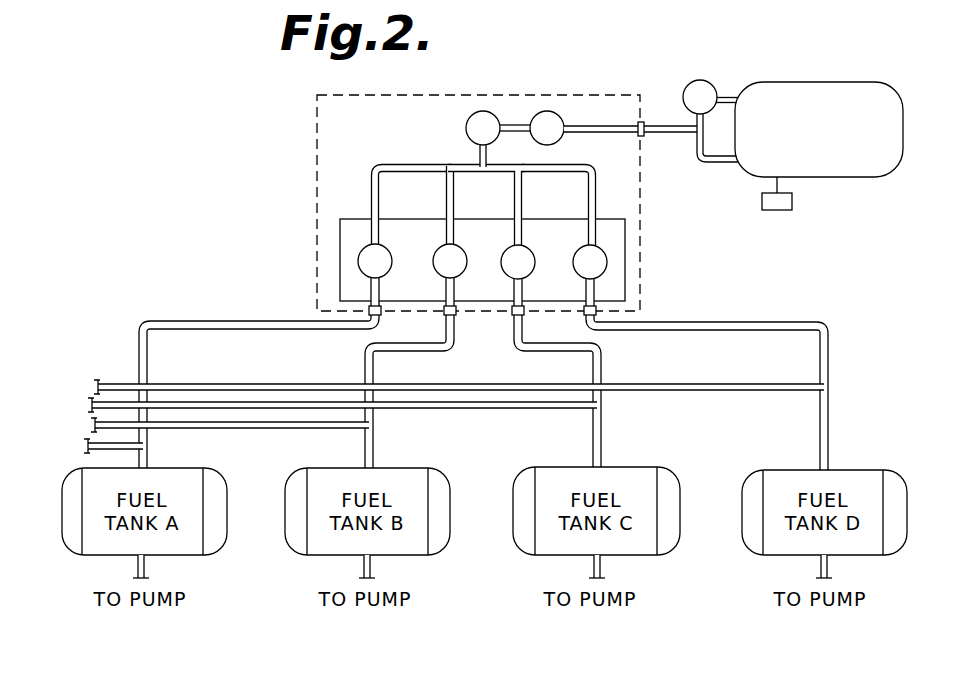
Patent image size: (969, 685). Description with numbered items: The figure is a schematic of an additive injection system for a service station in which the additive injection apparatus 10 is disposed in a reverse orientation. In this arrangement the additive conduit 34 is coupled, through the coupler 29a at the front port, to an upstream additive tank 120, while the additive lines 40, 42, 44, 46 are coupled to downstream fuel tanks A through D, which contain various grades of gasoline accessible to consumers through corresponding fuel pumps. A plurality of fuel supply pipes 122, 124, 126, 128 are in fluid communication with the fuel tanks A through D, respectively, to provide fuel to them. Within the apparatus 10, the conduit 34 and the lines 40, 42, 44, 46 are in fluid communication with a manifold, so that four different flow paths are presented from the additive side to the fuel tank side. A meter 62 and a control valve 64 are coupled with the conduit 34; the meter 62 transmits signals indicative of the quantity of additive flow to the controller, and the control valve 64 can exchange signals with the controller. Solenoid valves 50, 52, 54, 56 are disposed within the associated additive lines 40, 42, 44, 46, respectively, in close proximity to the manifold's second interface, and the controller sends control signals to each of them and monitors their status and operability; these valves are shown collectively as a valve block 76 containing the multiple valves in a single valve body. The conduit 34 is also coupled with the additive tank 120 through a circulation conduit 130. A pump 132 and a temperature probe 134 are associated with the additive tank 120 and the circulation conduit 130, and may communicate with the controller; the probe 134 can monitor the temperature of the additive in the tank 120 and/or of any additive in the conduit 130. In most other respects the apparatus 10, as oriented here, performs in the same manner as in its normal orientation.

The additive injection apparatus 10 is at (306, 148).
The coupler 29a is at (646, 121).
The additive conduit 34 is at (587, 125).
The additive line 40 is at (371, 196).
The additive line 42 is at (446, 196).
The additive line 44 is at (514, 204).
The additive line 46 is at (586, 204).
The solenoid valve 50 is at (386, 247).
The solenoid valve 52 is at (434, 281).
The solenoid valve 54 is at (535, 256).
The solenoid valve 56 is at (604, 268).
The meter 62 is at (467, 121).
The control valve 64 is at (545, 111).
The valve block 76 is at (625, 233).
The additive tank 120 is at (800, 86).
The fuel supply pipe 122 is at (146, 458).
The fuel supply pipe 124 is at (264, 432).
The fuel supply pipe 126 is at (476, 411).
The fuel supply pipe 128 is at (708, 395).
The circulation conduit 130 is at (727, 97).
The pump 132 is at (688, 84).
The temperature probe 134 is at (792, 212).